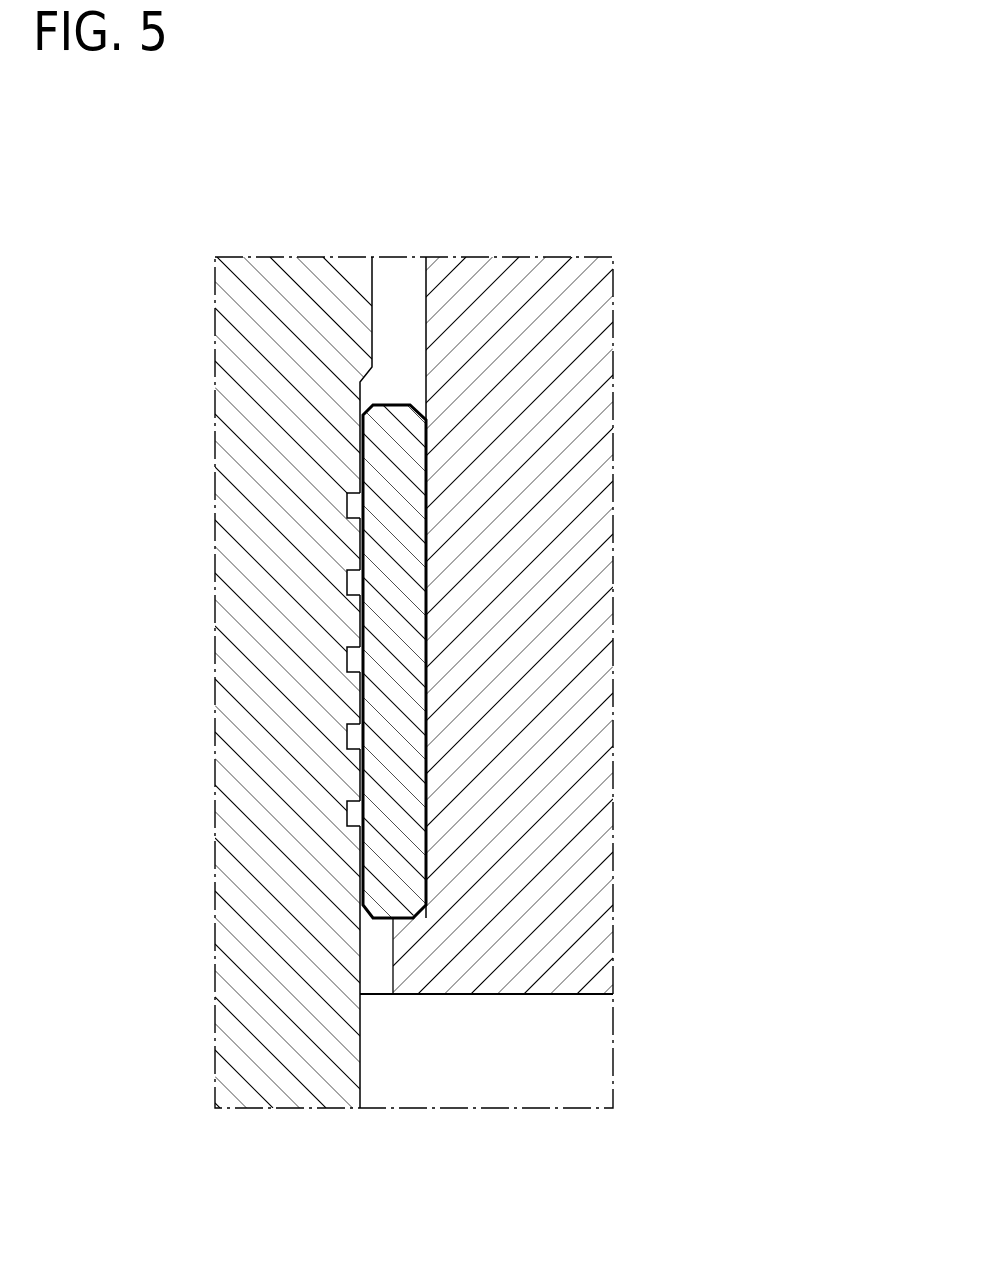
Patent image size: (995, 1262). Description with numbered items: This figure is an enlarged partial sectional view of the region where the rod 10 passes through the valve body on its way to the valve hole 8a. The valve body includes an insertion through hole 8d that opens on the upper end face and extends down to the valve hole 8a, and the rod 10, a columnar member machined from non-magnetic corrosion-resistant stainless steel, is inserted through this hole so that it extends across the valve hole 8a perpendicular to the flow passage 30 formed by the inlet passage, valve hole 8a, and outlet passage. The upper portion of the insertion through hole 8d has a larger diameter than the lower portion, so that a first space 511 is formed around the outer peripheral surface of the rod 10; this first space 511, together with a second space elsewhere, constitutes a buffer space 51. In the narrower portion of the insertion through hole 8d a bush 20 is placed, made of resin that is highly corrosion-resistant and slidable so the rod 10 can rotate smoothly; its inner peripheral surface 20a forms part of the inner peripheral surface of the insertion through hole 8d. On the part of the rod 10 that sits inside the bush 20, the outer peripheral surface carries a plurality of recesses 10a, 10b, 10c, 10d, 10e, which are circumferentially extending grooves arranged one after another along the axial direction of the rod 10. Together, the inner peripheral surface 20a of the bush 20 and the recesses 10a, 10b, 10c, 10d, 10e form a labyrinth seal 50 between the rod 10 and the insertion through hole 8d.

The rod 10 is at (333, 287).
The insertion through hole 8d is at (423, 282).
The first space 511 is at (408, 378).
The buffer space 51 is at (399, 331).
The bush 20 is at (388, 447).
The inner peripheral surface of the bush 20a is at (363, 865).
The recess 10a is at (352, 497).
The recess 10b is at (352, 574).
The recess 10c is at (352, 651).
The recess 10d is at (352, 728).
The recess 10e is at (352, 805).
The labyrinth seal 50 is at (703, 492).
The valve hole 8a is at (558, 994).
The flow passage 30 is at (486, 1051).